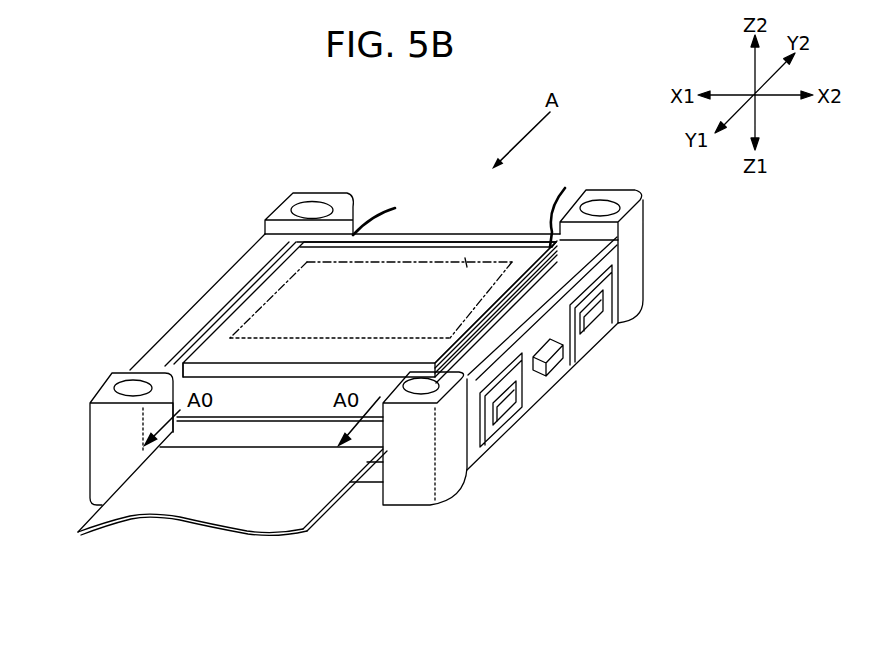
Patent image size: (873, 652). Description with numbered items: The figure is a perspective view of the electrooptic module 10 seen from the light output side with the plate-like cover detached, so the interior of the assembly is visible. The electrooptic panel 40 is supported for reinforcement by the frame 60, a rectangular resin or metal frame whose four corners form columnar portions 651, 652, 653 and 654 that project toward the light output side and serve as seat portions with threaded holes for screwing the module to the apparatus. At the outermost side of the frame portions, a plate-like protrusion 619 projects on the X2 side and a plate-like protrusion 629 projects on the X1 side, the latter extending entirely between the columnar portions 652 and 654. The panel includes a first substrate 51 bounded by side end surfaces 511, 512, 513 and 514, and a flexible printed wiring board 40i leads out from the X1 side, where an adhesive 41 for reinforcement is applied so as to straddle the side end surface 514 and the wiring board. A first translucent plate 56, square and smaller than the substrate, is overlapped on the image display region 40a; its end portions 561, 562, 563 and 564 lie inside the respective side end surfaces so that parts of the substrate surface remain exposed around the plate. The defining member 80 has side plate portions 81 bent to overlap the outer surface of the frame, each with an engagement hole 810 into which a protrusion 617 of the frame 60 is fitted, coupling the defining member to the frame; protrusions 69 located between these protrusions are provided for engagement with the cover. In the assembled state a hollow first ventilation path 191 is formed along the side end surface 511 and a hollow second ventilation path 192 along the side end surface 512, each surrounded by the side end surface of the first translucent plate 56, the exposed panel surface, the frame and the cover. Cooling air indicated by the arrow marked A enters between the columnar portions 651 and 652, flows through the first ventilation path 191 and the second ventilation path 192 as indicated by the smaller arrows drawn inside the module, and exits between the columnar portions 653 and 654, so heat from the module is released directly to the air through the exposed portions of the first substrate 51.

The electrooptic module 10 is at (587, 138).
The electrooptic panel 40 is at (425, 252).
The image display region 40a is at (467, 267).
The flexible printed wiring board 40i is at (277, 515).
The adhesive 41 is at (318, 435).
The first substrate 51 is at (409, 240).
The side end surface 511 is at (556, 248).
The side end surface 512 is at (213, 323).
The side end surface 513 is at (168, 415).
The side end surface 514 is at (517, 240).
The first translucent plate 56 is at (465, 258).
The end portion 561 is at (452, 335).
The end portion 562 is at (262, 283).
The end portion 563 is at (277, 363).
The end portion 564 is at (432, 252).
The frame 60 is at (420, 517).
The protrusion 617 is at (615, 308).
The plate-like protrusion 619 is at (620, 240).
The plate-like protrusion 629 is at (228, 273).
The columnar portion 651 is at (637, 217).
The columnar portion 652 is at (282, 192).
The columnar portion 653 is at (447, 478).
The columnar portion 654 is at (98, 423).
The protrusion 69 is at (568, 358).
The defining member 80 is at (612, 327).
The side plate portion 81 is at (615, 272).
The engagement hole 810 is at (582, 333).
The first ventilation path 191 is at (512, 335).
The second ventilation path 192 is at (197, 307).